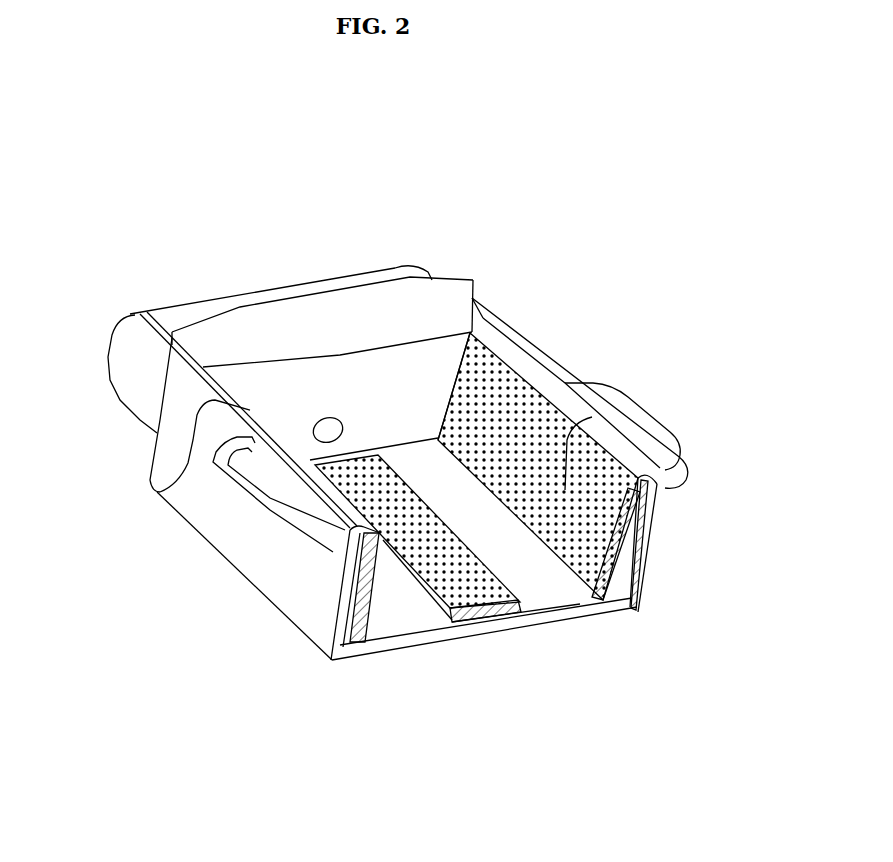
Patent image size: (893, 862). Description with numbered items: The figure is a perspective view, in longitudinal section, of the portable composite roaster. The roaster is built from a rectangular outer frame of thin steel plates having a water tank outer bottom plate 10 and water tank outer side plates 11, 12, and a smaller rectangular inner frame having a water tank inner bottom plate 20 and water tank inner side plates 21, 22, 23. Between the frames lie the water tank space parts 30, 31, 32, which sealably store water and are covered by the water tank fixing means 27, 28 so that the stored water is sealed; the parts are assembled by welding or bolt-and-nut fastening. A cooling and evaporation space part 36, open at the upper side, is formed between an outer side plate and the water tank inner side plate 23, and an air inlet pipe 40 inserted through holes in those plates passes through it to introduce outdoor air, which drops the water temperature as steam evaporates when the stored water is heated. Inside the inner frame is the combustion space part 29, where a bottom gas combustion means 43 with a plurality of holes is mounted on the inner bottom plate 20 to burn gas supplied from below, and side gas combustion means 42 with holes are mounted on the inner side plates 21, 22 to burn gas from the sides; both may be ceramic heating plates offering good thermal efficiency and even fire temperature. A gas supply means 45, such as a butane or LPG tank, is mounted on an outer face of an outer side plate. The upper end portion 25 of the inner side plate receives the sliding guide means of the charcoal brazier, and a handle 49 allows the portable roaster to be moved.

The water tank outer bottom plate 10 is at (420, 648).
The water tank outer side plate 11 is at (349, 570).
The water tank outer side plate 12 is at (658, 513).
The water tank inner bottom plate 20 is at (600, 612).
The water tank inner side plate 21 is at (347, 607).
The water tank inner side plate 22 is at (643, 560).
The water tank inner side plate 23 is at (420, 377).
The upper end portion of the water tank inner side plate 25 is at (280, 357).
The water tank fixing means 27 is at (157, 491).
The water tank fixing means 28 is at (523, 353).
The combustion space part 29 is at (500, 560).
The water tank space part 30 is at (480, 630).
The water tank space part 31 is at (347, 593).
The water tank space part 32 is at (638, 538).
The cooling and evaporation space part 36 is at (327, 343).
The air inlet pipe 40 is at (335, 426).
The side gas combustion means 42 is at (593, 418).
The bottom gas combustion means 43 is at (540, 622).
The gas supply means 45 is at (123, 347).
The handle 49 is at (588, 383).